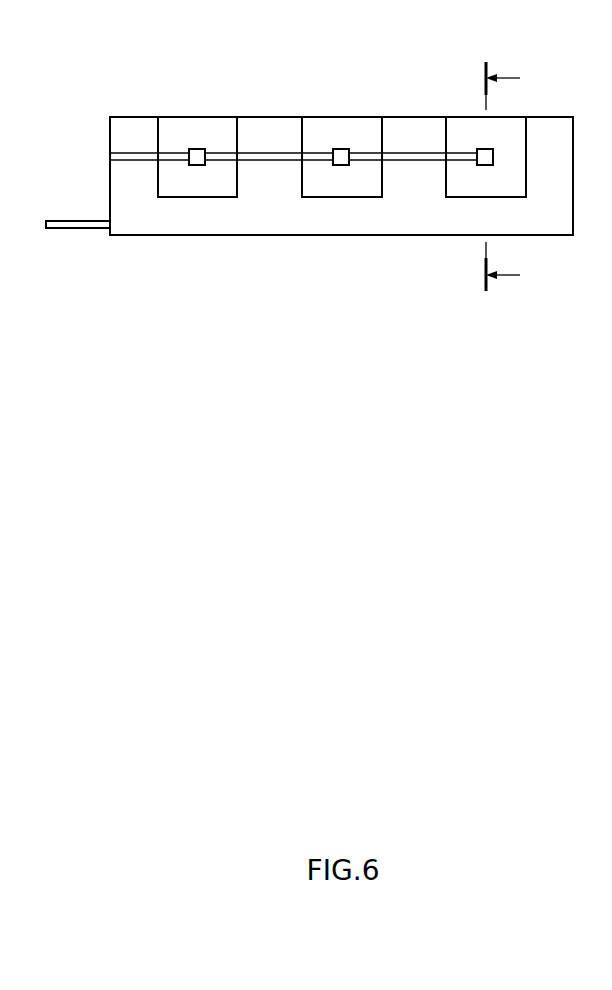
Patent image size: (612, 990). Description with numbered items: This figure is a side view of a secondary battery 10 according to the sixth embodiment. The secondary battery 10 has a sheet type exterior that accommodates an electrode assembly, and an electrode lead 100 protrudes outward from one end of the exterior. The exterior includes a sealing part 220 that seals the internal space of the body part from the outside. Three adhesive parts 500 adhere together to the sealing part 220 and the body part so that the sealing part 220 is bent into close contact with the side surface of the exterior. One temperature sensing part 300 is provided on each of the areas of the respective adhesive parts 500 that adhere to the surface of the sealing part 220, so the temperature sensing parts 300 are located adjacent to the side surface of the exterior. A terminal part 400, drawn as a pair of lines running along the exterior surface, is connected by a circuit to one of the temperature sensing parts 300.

The secondary battery 10 is at (420, 92).
The electrode lead 100 is at (76, 232).
The sealing part 220 is at (270, 228).
The temperature sensing part 300 is at (341, 148).
The terminal part 400 is at (110, 153).
The adhesive part 500 is at (197, 127).